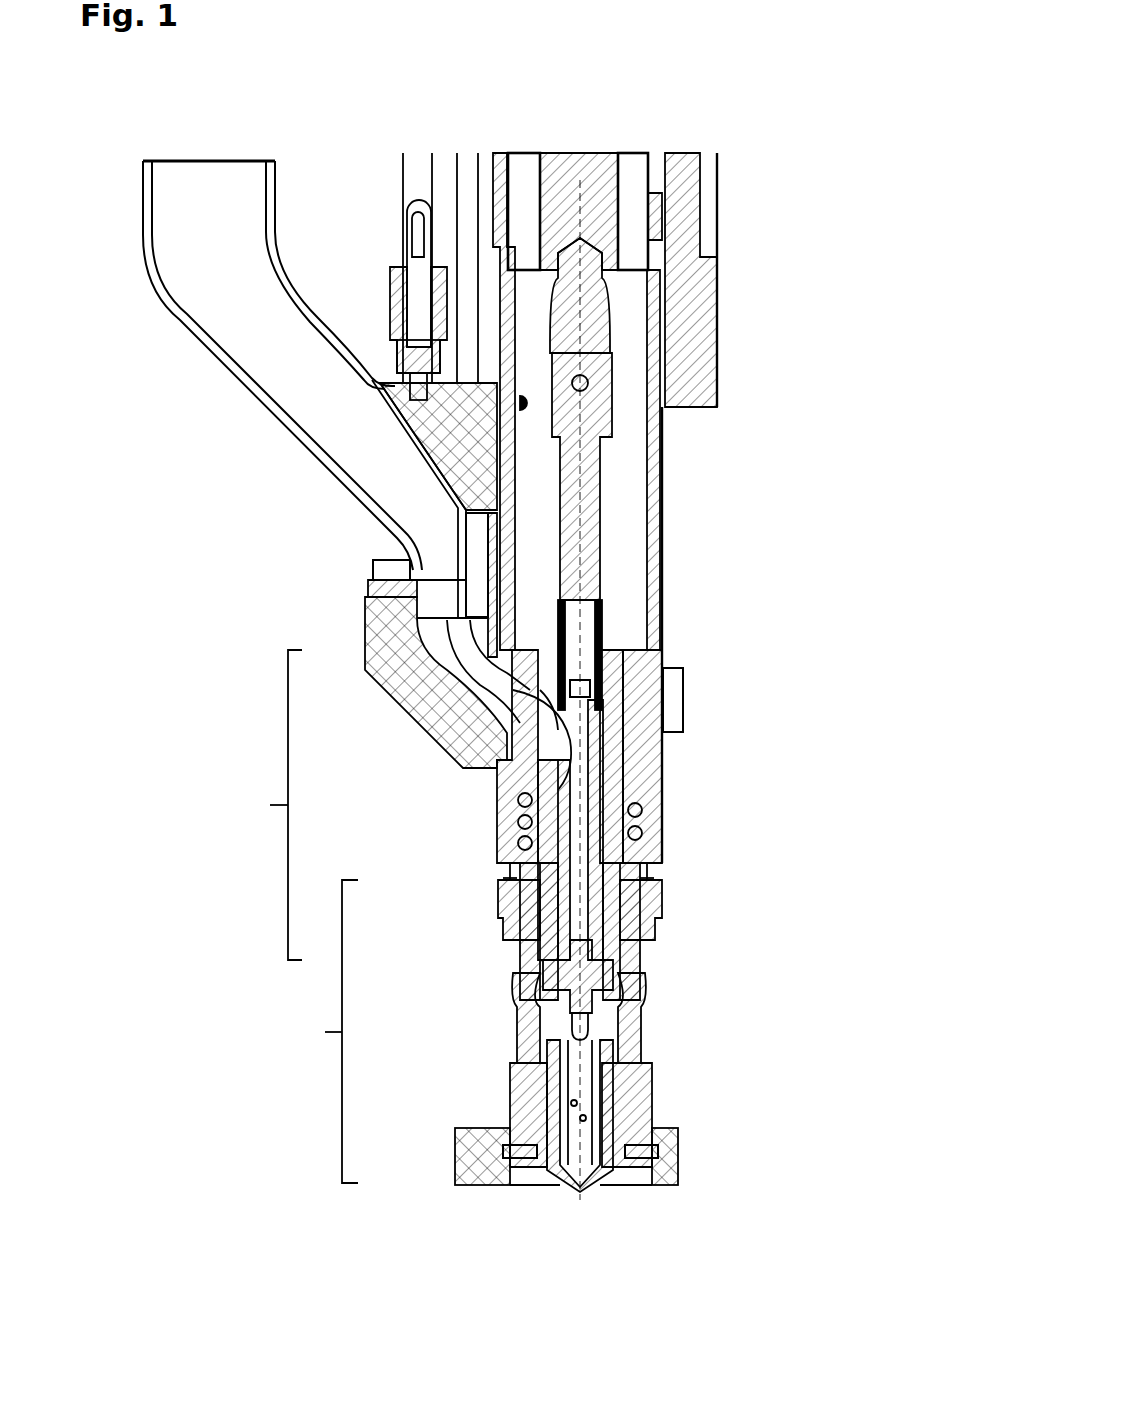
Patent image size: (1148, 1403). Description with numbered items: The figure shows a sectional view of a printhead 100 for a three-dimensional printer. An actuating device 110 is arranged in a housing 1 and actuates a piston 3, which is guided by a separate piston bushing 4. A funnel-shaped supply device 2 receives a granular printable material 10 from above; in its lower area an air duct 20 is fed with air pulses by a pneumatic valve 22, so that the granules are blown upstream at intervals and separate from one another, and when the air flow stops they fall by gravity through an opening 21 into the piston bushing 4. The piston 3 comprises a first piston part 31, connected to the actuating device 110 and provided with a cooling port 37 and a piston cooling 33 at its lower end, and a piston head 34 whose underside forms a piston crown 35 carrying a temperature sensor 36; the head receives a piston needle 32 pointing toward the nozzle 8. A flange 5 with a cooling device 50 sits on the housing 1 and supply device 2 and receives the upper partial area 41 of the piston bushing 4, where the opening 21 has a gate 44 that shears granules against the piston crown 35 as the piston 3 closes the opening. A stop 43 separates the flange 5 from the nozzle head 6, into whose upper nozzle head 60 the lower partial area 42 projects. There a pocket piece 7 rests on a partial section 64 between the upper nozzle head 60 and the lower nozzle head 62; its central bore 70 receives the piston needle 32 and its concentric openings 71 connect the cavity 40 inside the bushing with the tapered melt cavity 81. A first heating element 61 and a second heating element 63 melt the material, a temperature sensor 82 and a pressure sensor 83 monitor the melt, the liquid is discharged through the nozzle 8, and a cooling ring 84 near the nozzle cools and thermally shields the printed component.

The housing 1 is at (680, 437).
The supply device 2 is at (222, 285).
The piston 3 is at (612, 518).
The piston bushing 4 is at (271, 805).
The flange 5 is at (652, 767).
The nozzle head 6 is at (327, 1031).
The pocket piece 7 is at (555, 970).
The nozzle 8 is at (580, 1187).
The printable material 10 is at (293, 370).
The air duct 20 is at (432, 442).
The opening 21 is at (500, 742).
The pneumatic valve 22 is at (383, 260).
The first piston part 31 is at (572, 422).
The piston needle 32 is at (583, 806).
The piston cooling 33 is at (607, 694).
The piston head 34 is at (598, 615).
The piston crown 35 is at (553, 740).
The temperature sensor 36 is at (683, 700).
The cooling port 37 is at (585, 379).
The cavity 40 is at (508, 866).
The upper partial area 41 is at (683, 668).
The lower partial area 42 is at (548, 940).
The stop 43 is at (645, 871).
The gate 44 is at (652, 763).
The cooling device 50 is at (640, 812).
The upper nozzle head 60 is at (510, 900).
The first heating element 61 is at (645, 905).
The lower nozzle head 62 is at (522, 1121).
The second heating element 63 is at (548, 1070).
The partial section 64 is at (545, 1000).
The bore 70 is at (592, 1002).
The openings 71 is at (612, 976).
The melt cavity 81 is at (584, 1088).
The temperature sensor 82 is at (523, 1128).
The pressure sensor 83 is at (589, 1116).
The cooling ring 84 is at (668, 1165).
The printhead 100 is at (780, 166).
The actuating device 110 is at (582, 178).